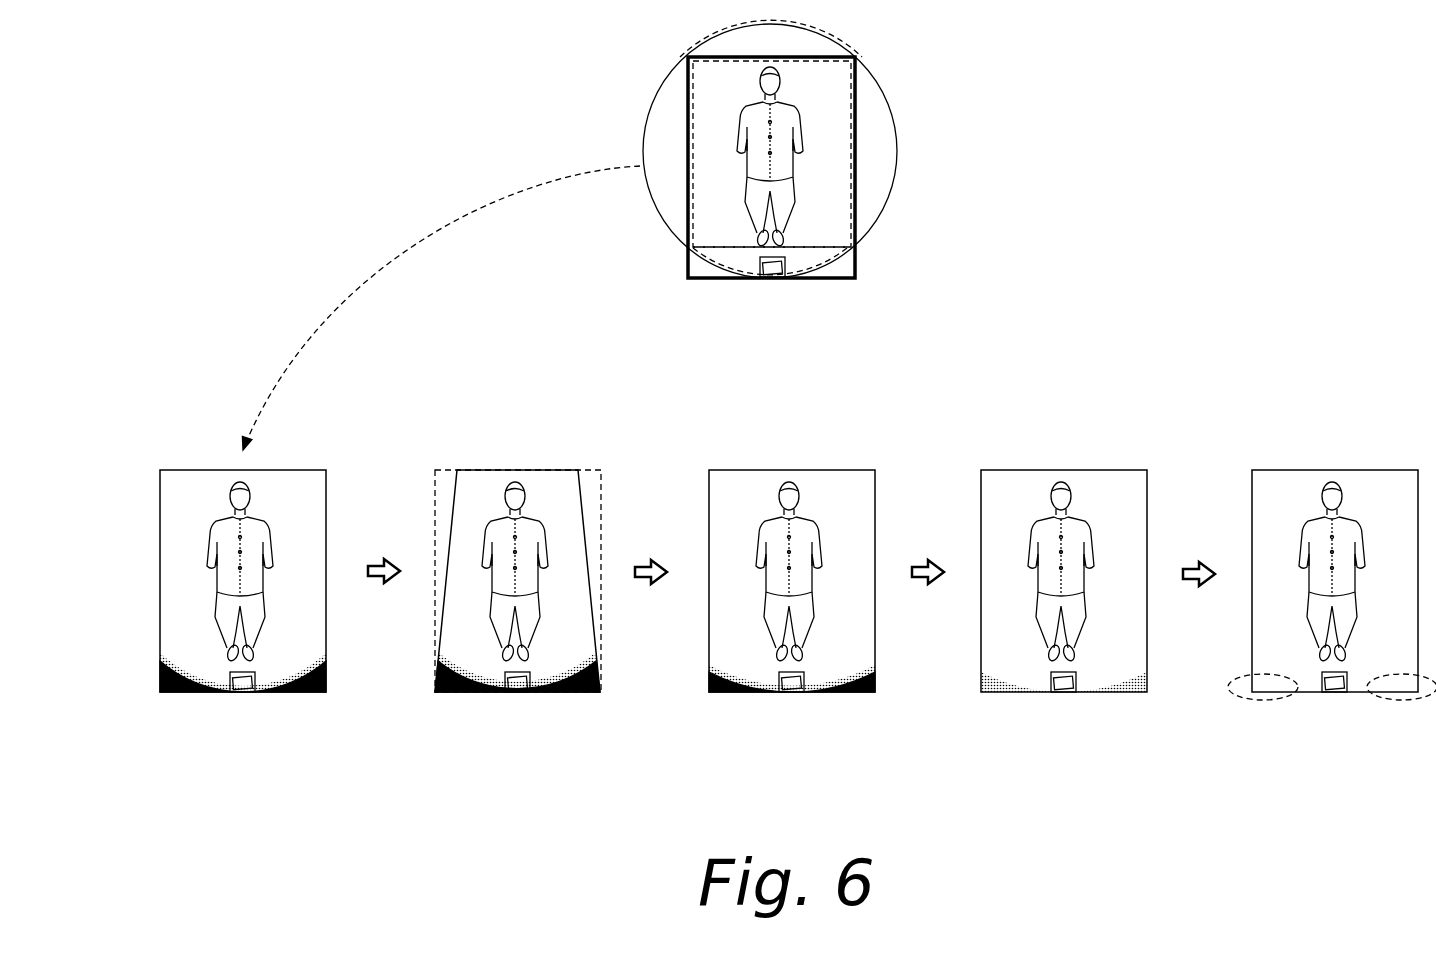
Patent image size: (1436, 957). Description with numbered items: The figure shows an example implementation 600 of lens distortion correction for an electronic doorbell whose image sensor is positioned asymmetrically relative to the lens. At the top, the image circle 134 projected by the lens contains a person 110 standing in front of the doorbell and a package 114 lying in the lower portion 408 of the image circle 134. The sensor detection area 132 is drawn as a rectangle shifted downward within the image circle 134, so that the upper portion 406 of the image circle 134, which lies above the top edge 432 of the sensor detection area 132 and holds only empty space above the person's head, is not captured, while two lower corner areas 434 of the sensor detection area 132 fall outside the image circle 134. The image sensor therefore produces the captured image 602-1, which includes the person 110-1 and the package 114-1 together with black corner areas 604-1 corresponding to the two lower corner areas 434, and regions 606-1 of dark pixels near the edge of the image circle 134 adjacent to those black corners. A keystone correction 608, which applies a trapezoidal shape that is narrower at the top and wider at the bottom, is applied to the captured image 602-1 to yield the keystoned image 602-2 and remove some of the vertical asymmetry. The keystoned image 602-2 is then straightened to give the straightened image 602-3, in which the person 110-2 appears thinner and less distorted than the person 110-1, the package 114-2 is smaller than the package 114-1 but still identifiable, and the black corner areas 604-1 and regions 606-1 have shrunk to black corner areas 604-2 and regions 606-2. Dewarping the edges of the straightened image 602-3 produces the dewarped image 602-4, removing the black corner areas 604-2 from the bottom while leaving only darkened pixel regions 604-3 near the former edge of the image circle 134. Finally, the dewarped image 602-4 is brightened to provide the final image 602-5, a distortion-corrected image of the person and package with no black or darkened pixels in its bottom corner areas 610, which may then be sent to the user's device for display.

The example implementation of lens distortion correction 600 is at (171, 117).
The person 110 is at (800, 110).
The package 114 is at (760, 262).
The sensor detection area 132 is at (687, 138).
The image circle 134 is at (898, 150).
The upper portion of the image circle 406 is at (825, 32).
The lower portion of the image circle 408 is at (828, 247).
The top edge of the sensor detection area 432 is at (718, 56).
The two lower corner areas 434 is at (828, 276).
The captured image 602-1 is at (170, 405).
The keystoned image 602-2 is at (435, 405).
The straightened image 602-3 is at (702, 405).
The dewarped image 602-4 is at (972, 405).
The final image 602-5 is at (1241, 405).
The person 110-1 is at (208, 528).
The person 110-2 is at (765, 527).
The package 114-1 is at (228, 668).
The package 114-2 is at (785, 668).
The black corner areas 604-1 is at (300, 692).
The black corner areas 604-2 is at (850, 694).
The dark corner region 604-3 is at (1120, 694).
The regions of dark pixels 606-1 is at (168, 660).
The regions of dark pixels 606-2 is at (718, 672).
The keystone correction 608 is at (435, 523).
The bottom corner areas 610 is at (1400, 700).